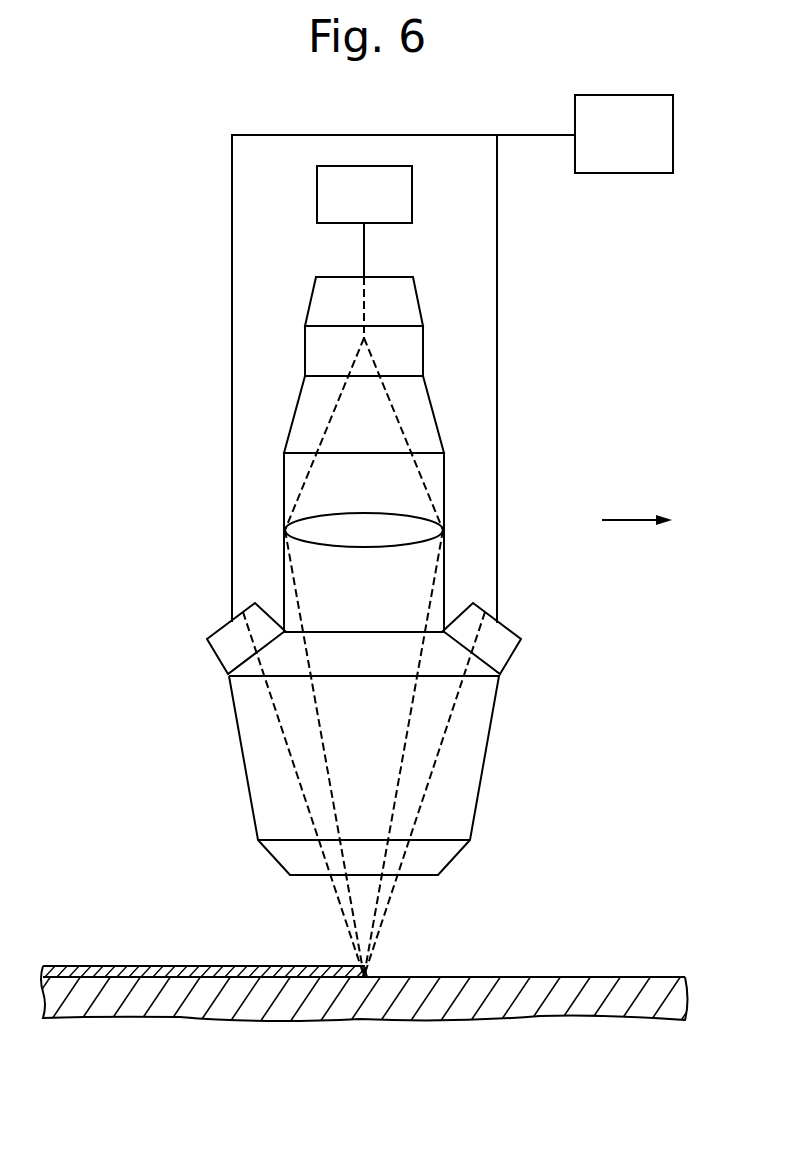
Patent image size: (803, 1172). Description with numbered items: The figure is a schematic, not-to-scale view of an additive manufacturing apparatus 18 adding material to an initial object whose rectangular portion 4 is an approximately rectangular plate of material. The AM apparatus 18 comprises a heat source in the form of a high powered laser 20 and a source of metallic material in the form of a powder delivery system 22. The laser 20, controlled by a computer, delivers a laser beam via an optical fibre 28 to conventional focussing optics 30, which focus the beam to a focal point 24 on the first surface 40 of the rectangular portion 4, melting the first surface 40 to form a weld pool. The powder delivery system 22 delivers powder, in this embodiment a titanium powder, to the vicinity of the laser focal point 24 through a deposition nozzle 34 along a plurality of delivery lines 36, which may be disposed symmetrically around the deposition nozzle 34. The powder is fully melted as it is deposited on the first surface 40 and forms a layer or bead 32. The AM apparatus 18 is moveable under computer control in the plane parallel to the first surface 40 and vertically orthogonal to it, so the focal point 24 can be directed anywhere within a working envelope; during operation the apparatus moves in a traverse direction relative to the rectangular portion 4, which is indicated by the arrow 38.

The rectangular portion 4 is at (643, 987).
The AM apparatus 18 is at (152, 252).
The high powered laser 20 is at (380, 208).
The powder delivery system 22 is at (640, 153).
The focal point 24 is at (363, 981).
The optical fibre 28 is at (364, 243).
The focussing optics 30 is at (420, 540).
The layer or bead 32 is at (118, 966).
The deposition nozzle 34 is at (268, 850).
The delivery lines 36 is at (296, 769).
The feed direction 38 is at (631, 519).
The first surface 40 is at (483, 977).